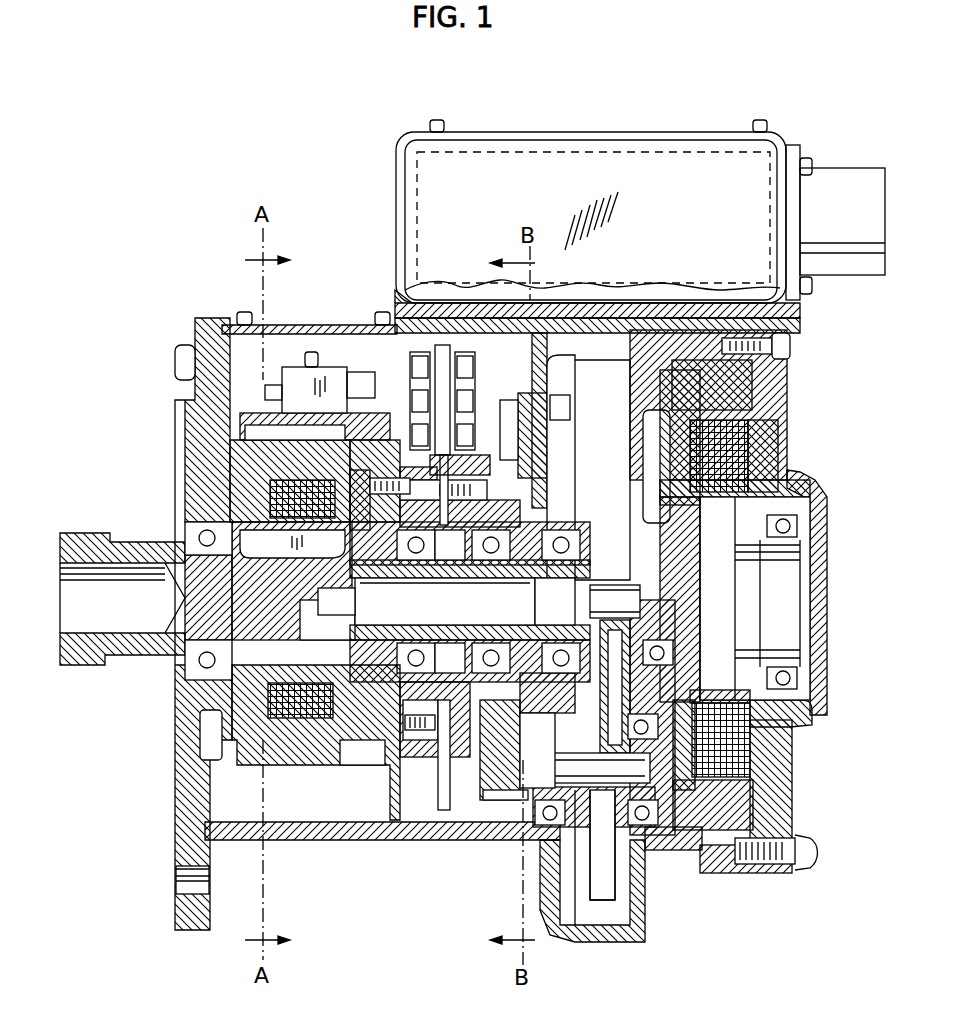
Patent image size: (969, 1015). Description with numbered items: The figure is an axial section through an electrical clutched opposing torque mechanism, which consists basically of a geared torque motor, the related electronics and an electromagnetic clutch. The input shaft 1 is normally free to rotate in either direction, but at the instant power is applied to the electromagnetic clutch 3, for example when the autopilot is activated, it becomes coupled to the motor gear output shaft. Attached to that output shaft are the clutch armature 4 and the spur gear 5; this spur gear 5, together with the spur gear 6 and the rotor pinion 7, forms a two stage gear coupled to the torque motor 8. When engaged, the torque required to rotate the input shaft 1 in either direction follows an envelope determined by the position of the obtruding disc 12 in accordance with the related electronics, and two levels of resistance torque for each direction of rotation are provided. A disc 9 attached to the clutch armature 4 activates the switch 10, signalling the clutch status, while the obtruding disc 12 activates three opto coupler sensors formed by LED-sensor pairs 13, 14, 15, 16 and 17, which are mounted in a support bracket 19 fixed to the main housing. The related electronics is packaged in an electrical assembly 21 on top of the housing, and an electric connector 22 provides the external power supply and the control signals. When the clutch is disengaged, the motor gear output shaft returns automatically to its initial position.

The input shaft 1 is at (100, 530).
The electromagnetic clutch 3 is at (290, 765).
The clutch armature 4 is at (336, 765).
The spur gear 5 is at (512, 458).
The spur gear 6 is at (500, 795).
The rotor pinion 7 is at (622, 580).
The torque motor 8 is at (730, 462).
The disc 9 is at (378, 770).
The switch 10 is at (292, 365).
The obtruding disc 12 is at (438, 800).
The LED-sensor pair element 13 is at (472, 380).
The LED-sensor pair element 14 is at (438, 370).
The LED-sensor pair element 15 is at (472, 406).
The LED-sensor pair element 16 is at (443, 410).
The LED-sensor pair element 17 is at (470, 436).
The support bracket 19 is at (482, 300).
The electrical assembly 21 is at (652, 155).
The electric connector 22 is at (840, 178).